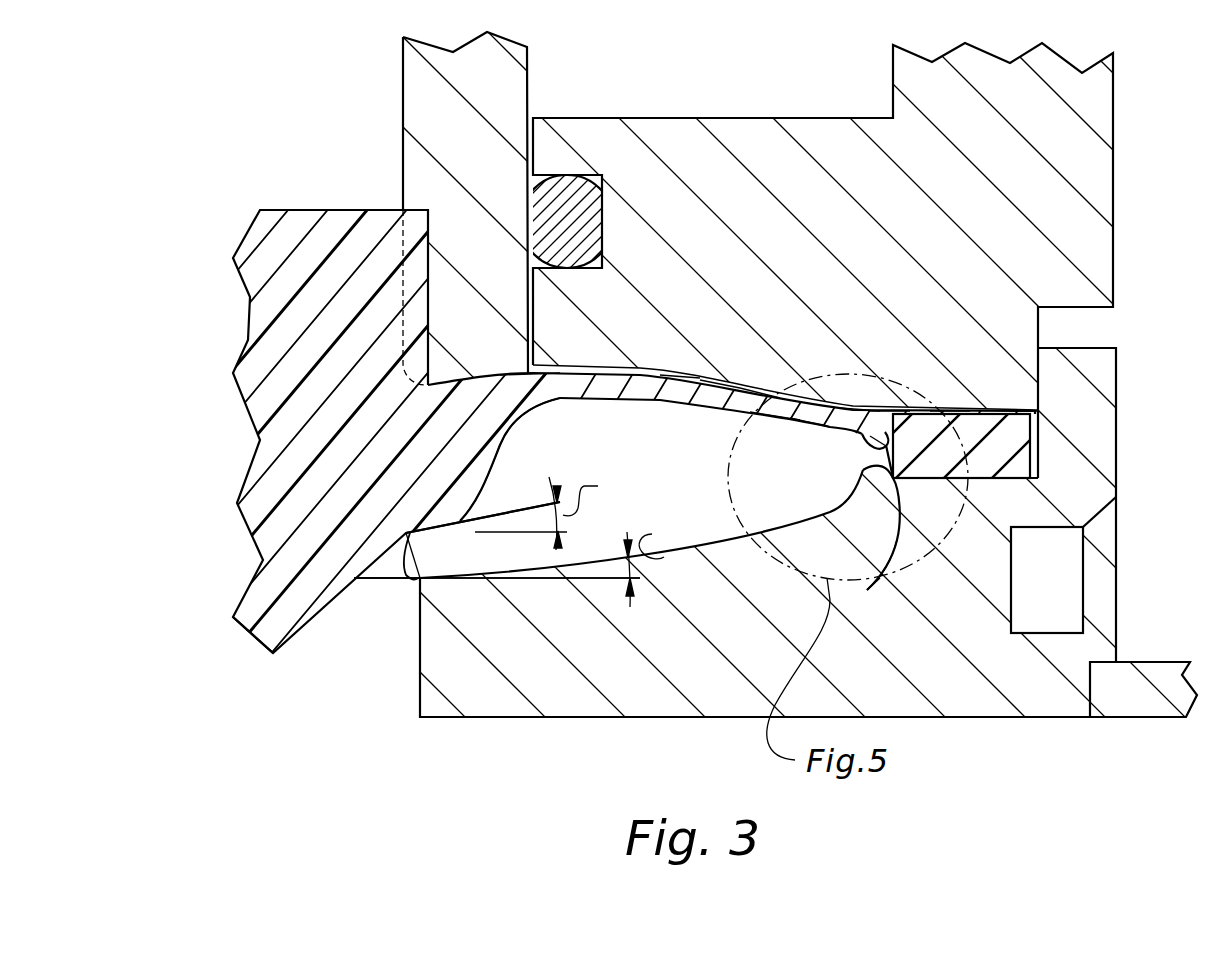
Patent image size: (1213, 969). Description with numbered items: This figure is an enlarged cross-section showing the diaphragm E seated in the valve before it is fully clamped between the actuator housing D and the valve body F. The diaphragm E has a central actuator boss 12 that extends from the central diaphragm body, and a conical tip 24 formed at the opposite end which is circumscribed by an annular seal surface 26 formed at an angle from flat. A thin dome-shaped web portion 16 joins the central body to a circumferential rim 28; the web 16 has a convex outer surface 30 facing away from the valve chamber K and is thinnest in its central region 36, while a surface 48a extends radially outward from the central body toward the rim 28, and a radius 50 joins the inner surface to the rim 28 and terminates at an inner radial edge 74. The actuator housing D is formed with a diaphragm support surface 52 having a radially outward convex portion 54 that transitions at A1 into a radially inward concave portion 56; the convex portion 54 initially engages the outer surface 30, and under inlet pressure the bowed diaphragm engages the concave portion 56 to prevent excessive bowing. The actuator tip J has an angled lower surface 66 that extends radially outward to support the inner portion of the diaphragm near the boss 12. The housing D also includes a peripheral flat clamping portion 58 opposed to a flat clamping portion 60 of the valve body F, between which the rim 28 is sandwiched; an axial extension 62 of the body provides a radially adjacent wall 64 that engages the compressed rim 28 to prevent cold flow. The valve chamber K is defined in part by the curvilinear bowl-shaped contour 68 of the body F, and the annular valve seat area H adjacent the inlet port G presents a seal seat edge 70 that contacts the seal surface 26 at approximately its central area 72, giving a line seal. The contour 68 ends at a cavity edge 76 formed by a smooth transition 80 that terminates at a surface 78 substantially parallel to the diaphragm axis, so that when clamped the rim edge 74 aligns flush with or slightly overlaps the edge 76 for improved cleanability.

The central actuator boss 12 is at (283, 357).
The web portion 16 is at (662, 405).
The conical tip 24 is at (250, 634).
The annular seal surface 26 is at (412, 582).
The circumferential rim 28 is at (1015, 447).
The convex outer surface 30 is at (806, 424).
The central region of the web 36 is at (773, 410).
The surface 48a is at (495, 460).
The radius 50 is at (888, 409).
The diaphragm support surface 52 is at (718, 374).
The radially outward convex portion 54 is at (860, 408).
The radially inward concave portion 56 is at (677, 372).
The peripheral flat clamping portion 58 is at (947, 409).
The peripheral flat clamping portion of the valve body 60 is at (968, 503).
The axial extension 62 is at (1107, 458).
The radially adjacent wall 64 is at (1040, 412).
The angled lower surface 66 is at (517, 371).
The curvilinear bowl-shaped contour 68 is at (725, 540).
The annular seal seat edge 70 is at (413, 582).
The central area 72 is at (470, 523).
The inner radial edge 74 is at (880, 460).
The edge of the valve contour 76 is at (877, 466).
The surface 78 is at (900, 500).
The transition 80 is at (890, 573).
The transition A1 is at (757, 392).
The actuator housing D is at (733, 116).
The diaphragm E is at (310, 190).
The valve body F is at (674, 641).
The port G is at (367, 580).
The valve seat area H is at (437, 547).
The tip J is at (398, 92).
The valve chamber K is at (643, 460).